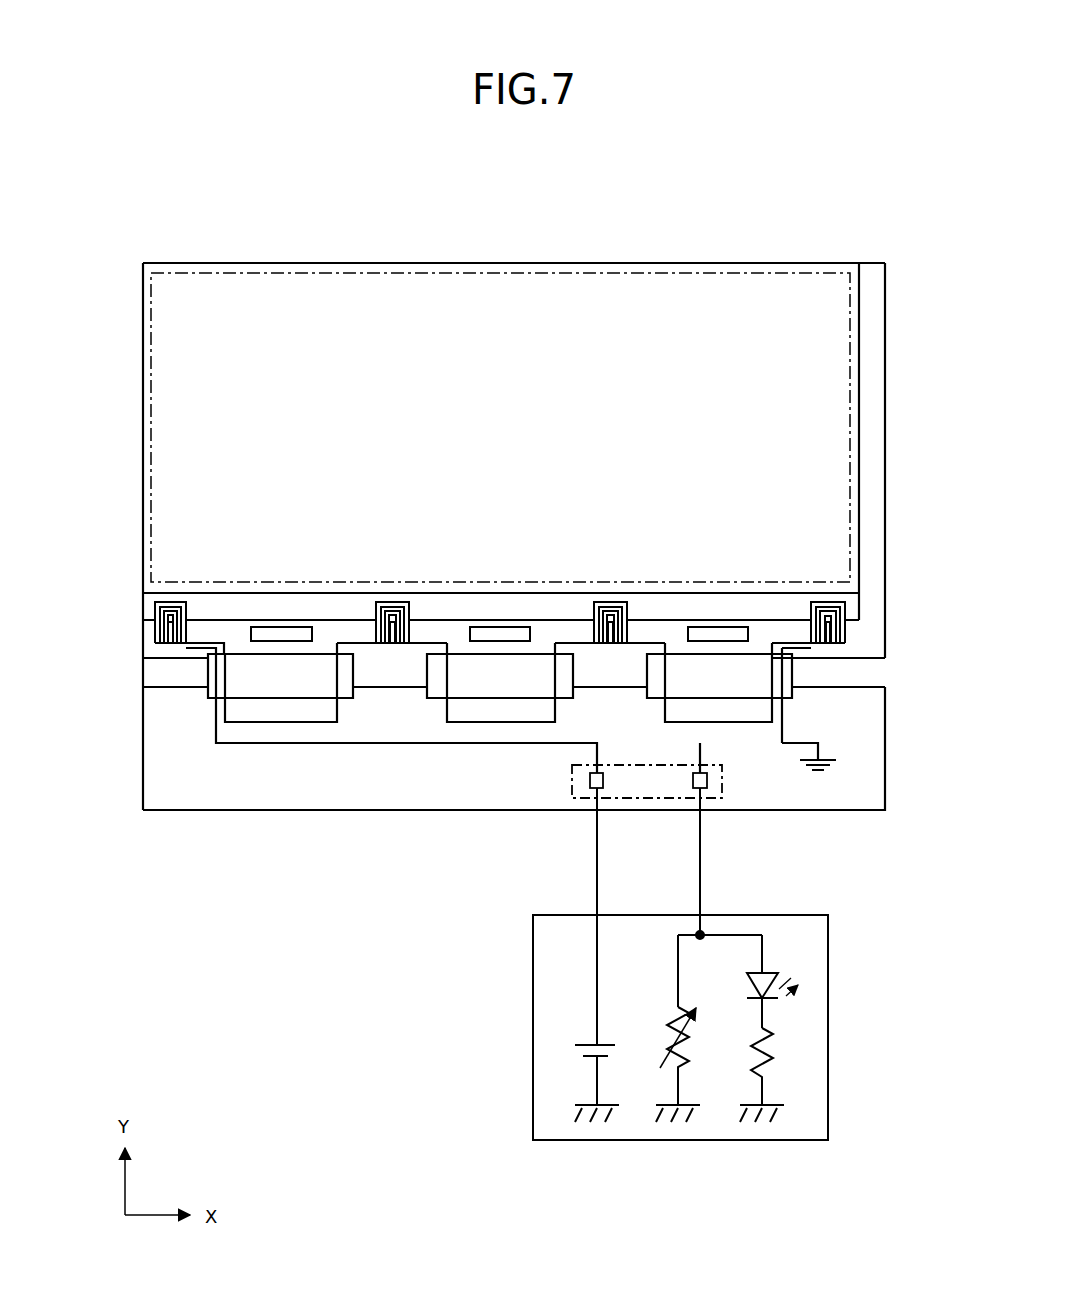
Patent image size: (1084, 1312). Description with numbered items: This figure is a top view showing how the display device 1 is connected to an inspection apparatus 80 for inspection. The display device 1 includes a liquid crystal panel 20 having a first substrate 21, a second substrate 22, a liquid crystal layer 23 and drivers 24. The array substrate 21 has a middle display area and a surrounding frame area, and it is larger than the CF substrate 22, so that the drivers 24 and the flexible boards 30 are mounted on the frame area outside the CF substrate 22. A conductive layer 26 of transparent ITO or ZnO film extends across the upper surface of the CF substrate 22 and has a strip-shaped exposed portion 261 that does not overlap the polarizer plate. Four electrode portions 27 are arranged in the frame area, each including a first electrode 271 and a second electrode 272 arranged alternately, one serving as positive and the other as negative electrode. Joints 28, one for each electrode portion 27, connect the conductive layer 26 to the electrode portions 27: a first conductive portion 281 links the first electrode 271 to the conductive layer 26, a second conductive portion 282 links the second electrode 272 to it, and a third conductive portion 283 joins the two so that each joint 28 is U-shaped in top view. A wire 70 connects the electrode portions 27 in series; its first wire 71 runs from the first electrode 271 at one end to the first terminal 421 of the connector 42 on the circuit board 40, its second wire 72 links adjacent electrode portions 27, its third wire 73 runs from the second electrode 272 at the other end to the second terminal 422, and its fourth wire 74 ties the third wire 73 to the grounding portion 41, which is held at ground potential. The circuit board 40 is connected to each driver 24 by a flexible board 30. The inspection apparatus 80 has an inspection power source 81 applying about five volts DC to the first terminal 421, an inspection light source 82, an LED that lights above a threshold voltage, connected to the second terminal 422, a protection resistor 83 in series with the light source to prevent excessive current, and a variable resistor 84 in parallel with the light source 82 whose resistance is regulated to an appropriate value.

The display device 1 is at (94, 233).
The liquid crystal panel 20 is at (511, 494).
The first substrate 21 is at (885, 300).
The second substrate 22 is at (859, 373).
The liquid crystal layer 23 is at (456, 395).
The drivers 24 is at (273, 642).
The conductive layer 26 is at (889, 608).
The exposed portion 261 is at (843, 604).
The electrode portions 27 is at (133, 677).
The first electrode 271 is at (189, 648).
The second electrode 272 is at (168, 668).
The joints 28 is at (114, 600).
The first conductive portion 281 is at (170, 622).
The second conductive portion 282 is at (170, 627).
The third conductive portion 283 is at (170, 632).
The flexible boards 30 is at (297, 683).
The circuit board 40 is at (858, 793).
The grounding portion 41 is at (833, 752).
The connector 42 is at (638, 813).
The first terminal 421 is at (590, 783).
The second terminal 422 is at (706, 782).
The wire 70 is at (466, 727).
The first wire 71 is at (215, 728).
The second wire 72 is at (242, 722).
The third wire 73 is at (784, 712).
The fourth wire 74 is at (787, 738).
The inspection apparatus 80 is at (675, 992).
The inspection power source 81 is at (592, 1045).
The inspection light source 82 is at (767, 972).
The protection resistor 83 is at (768, 1077).
The variable resistor 84 is at (677, 1018).